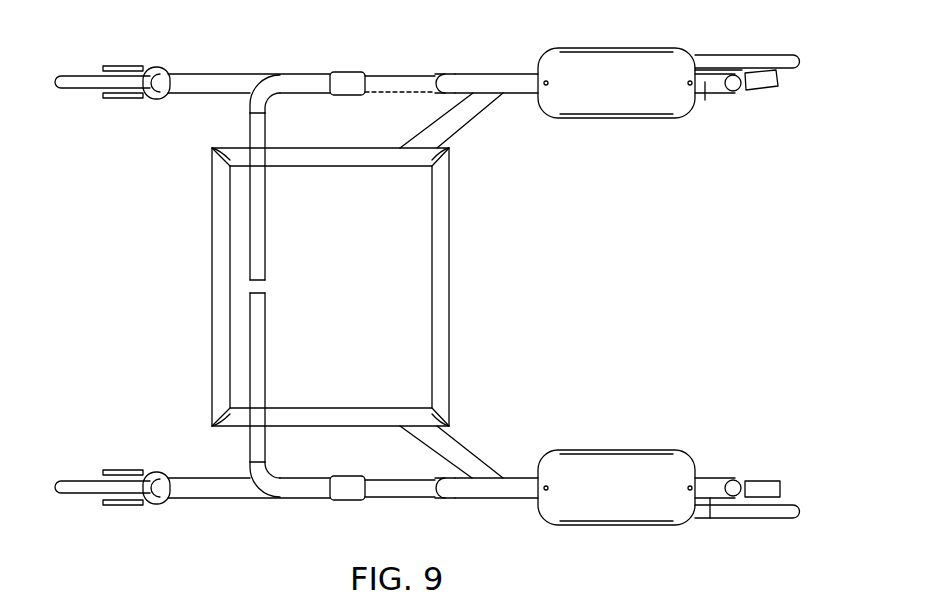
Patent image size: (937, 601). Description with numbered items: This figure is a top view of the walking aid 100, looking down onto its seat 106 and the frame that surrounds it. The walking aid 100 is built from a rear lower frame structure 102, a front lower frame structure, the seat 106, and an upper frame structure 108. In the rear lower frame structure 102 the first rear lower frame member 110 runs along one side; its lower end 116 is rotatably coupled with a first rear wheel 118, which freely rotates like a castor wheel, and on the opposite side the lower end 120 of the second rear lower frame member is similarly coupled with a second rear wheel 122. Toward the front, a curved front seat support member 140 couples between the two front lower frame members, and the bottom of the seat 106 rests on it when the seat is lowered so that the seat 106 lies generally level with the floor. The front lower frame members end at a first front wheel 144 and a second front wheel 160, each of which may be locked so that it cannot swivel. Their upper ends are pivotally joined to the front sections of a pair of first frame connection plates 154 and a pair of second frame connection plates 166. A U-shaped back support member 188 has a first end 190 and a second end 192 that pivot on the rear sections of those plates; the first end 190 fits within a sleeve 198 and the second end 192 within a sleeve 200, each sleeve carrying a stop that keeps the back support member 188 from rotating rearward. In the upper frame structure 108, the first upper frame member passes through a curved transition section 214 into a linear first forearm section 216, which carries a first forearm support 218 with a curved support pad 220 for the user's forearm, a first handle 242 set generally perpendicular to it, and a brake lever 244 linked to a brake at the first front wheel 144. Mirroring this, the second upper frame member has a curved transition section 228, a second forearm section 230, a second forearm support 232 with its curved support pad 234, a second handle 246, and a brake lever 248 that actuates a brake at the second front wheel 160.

The walking aid 100 is at (283, 33).
The rear lower frame structure 102 is at (226, 506).
The seat 106 is at (350, 291).
The upper frame structure 108 is at (632, 124).
The first rear lower frame member 110 is at (242, 500).
The lower end 116 is at (145, 500).
The first rear wheel 118 is at (90, 496).
The lower end 120 is at (170, 103).
The second rear wheel 122 is at (75, 88).
The front seat support member 140 is at (470, 455).
The first front wheel 144 is at (762, 520).
The first frame connection plates 154 is at (378, 502).
The second front wheel 160 is at (770, 62).
The second frame connection plates 166 is at (378, 96).
The back support member 188 is at (243, 440).
The first end 190 is at (322, 468).
The second end 192 is at (322, 98).
The sleeve 198 is at (345, 485).
The sleeve 200 is at (345, 97).
The curved transition section 214 is at (480, 492).
The first forearm section 216 is at (713, 486).
The first forearm support 218 is at (590, 437).
The curved support pad 220 is at (638, 498).
The curved transition section 228 is at (497, 82).
The second forearm section 230 is at (708, 96).
The second forearm support 232 is at (600, 38).
The curved support pad 234 is at (638, 93).
The first handle 242 is at (736, 482).
The brake lever 244 is at (775, 492).
The second handle 246 is at (735, 92).
The brake lever 248 is at (772, 78).